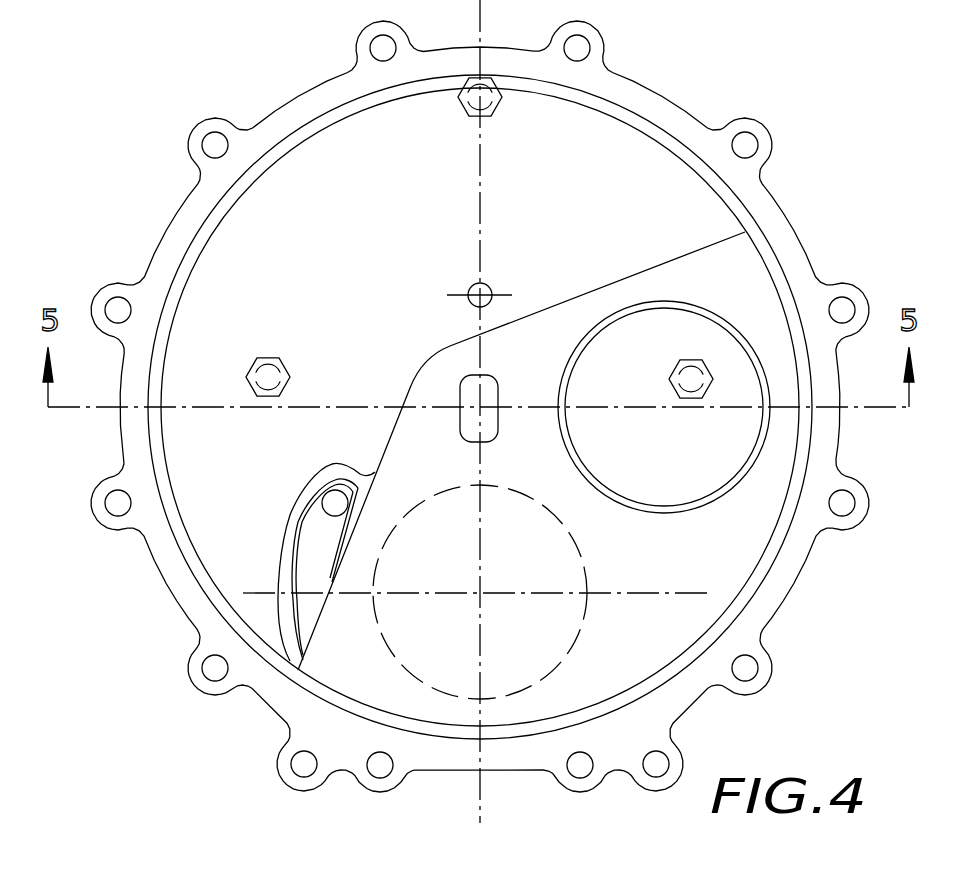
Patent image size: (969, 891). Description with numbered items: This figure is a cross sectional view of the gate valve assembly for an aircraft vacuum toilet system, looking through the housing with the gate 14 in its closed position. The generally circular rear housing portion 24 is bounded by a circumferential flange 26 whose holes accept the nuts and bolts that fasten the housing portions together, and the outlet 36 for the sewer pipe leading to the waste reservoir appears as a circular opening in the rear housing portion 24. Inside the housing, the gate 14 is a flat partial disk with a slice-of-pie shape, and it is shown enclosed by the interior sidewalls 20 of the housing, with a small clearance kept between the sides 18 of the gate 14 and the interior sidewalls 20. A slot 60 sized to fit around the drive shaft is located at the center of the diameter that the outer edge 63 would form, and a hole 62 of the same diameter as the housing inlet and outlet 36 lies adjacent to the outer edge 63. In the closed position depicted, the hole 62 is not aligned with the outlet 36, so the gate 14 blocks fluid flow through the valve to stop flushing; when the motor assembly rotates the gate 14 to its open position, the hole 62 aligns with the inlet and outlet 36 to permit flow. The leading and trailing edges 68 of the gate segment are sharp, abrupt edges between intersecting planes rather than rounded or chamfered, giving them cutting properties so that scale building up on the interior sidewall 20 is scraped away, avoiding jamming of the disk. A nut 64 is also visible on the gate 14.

The gate 14 is at (588, 278).
The sides of the gate 18 is at (617, 663).
The interior sidewalls of the housing 20 is at (347, 165).
The rear housing portion 24 is at (803, 214).
The circumferential flange 26 is at (657, 107).
The outlet 36 is at (585, 619).
The slot 60 is at (462, 377).
The hole 62 is at (697, 483).
The outer edge of the gate 63 is at (503, 725).
The nut 64 is at (592, 444).
The leading and trailing edges 68 is at (673, 260).